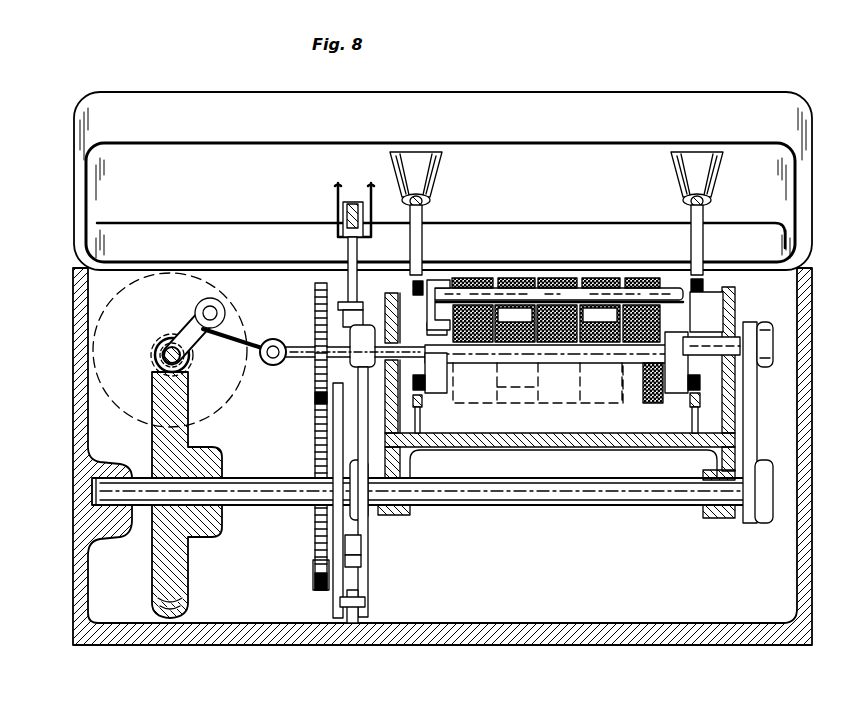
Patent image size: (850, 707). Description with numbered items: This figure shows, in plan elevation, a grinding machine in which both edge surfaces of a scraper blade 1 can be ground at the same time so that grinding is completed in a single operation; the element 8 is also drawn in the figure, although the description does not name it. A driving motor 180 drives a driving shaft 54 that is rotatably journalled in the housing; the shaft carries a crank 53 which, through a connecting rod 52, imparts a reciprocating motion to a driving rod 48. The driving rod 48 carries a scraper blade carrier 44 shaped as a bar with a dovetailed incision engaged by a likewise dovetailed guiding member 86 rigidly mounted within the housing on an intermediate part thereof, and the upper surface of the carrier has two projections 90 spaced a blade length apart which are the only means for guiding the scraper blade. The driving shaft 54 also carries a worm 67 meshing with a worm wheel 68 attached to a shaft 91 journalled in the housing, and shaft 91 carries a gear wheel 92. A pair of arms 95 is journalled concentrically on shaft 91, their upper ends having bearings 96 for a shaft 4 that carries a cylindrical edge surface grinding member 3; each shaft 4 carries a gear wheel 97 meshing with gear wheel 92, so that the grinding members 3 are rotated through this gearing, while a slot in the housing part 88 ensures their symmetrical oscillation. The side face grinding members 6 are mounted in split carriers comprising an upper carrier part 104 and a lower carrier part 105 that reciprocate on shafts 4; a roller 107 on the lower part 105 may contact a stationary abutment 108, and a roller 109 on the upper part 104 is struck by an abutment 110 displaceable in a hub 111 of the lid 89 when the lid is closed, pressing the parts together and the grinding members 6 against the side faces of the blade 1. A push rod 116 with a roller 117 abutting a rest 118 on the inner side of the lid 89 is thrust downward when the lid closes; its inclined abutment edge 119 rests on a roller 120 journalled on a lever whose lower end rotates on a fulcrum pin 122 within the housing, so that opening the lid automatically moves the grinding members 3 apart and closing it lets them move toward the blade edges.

The scraper blade 1 is at (567, 350).
The cylindrical edge surface grinding member 3 is at (563, 312).
The shaft 4 is at (388, 320).
The side face grinding member 6 is at (514, 292).
The guide rail 8 is at (466, 289).
The scraper blade carrier 44 is at (513, 366).
The driving rod 48 is at (290, 358).
The connecting rod 52 is at (245, 335).
The crank 53 is at (200, 345).
The driving shaft 54 is at (160, 370).
The worm 67 is at (155, 360).
The worm wheel 68 is at (163, 570).
The guiding member 86 is at (543, 430).
The housing part 88 is at (410, 448).
The lid 89 is at (545, 150).
The projection 90 is at (500, 320).
The shaft 91 is at (260, 503).
The gear wheel 92 is at (316, 565).
The arm 95 is at (368, 528).
The bearing 96 is at (766, 322).
The gear wheel 97 is at (316, 300).
The upper carrier part 104 is at (440, 290).
The lower carrier part 105 is at (447, 393).
The roller 107 is at (447, 378).
The stationary abutment 108 is at (422, 402).
The roller 109 is at (413, 288).
The abutment 110 is at (423, 243).
The hub 111 is at (437, 180).
The push rod 116 is at (348, 258).
The roller 117 is at (343, 215).
The rest 118 is at (335, 200).
The inclined abutment edge 119 is at (361, 540).
The roller 120 is at (357, 567).
The fulcrum pin 122 is at (365, 603).
The driving motor 180 is at (73, 335).